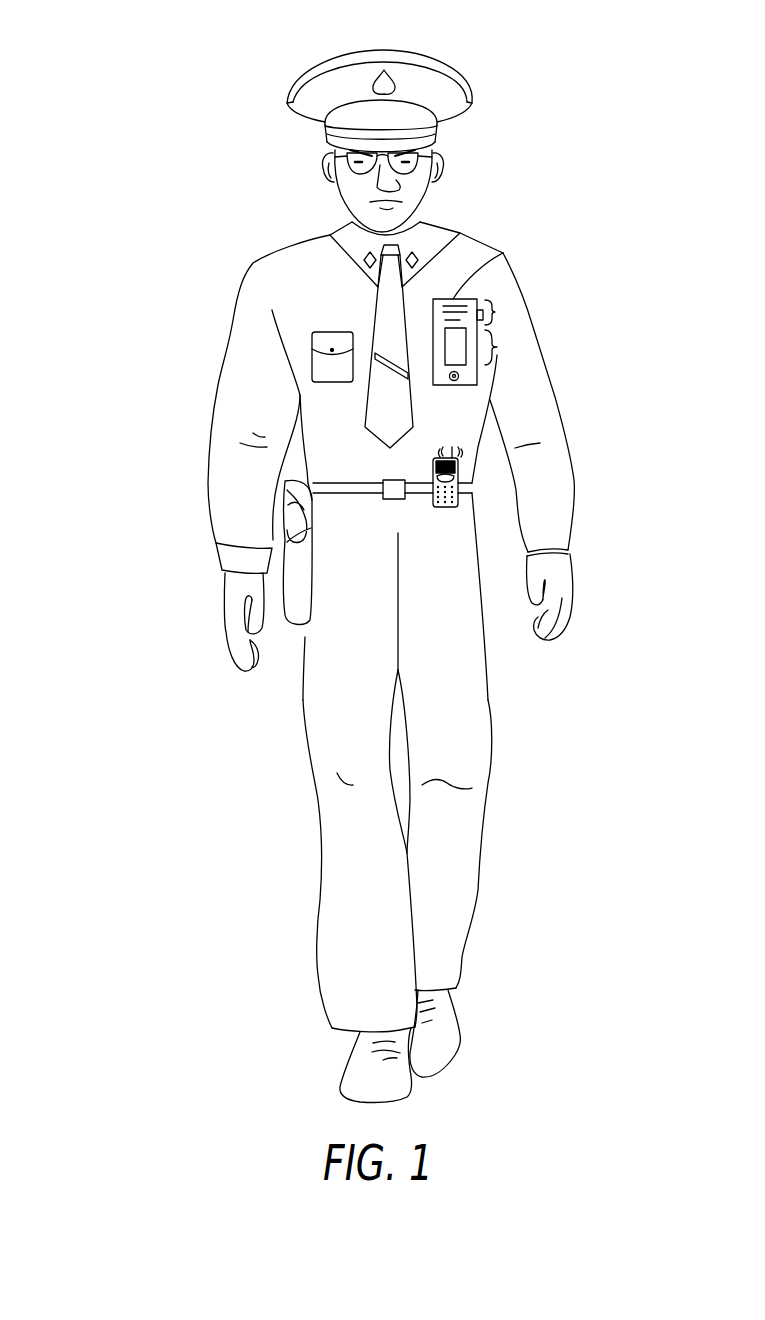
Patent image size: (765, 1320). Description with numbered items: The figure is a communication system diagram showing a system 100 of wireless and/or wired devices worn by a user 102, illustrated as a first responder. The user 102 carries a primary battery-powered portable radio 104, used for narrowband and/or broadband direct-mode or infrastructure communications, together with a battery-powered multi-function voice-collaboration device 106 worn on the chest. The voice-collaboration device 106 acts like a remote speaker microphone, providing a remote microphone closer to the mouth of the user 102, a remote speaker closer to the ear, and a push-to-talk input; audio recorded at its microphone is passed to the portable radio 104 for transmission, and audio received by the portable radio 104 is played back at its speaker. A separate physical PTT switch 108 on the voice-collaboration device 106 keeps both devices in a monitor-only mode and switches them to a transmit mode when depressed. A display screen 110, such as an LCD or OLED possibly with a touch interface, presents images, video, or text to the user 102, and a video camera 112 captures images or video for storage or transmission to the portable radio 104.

The system 100 is at (110, 129).
The user 102 is at (491, 241).
The portable radio 104 is at (458, 461).
The voice-collaboration device 106 is at (503, 254).
The PTT switch 108 is at (495, 312).
The display screen 110 is at (497, 347).
The video camera 112 is at (458, 376).